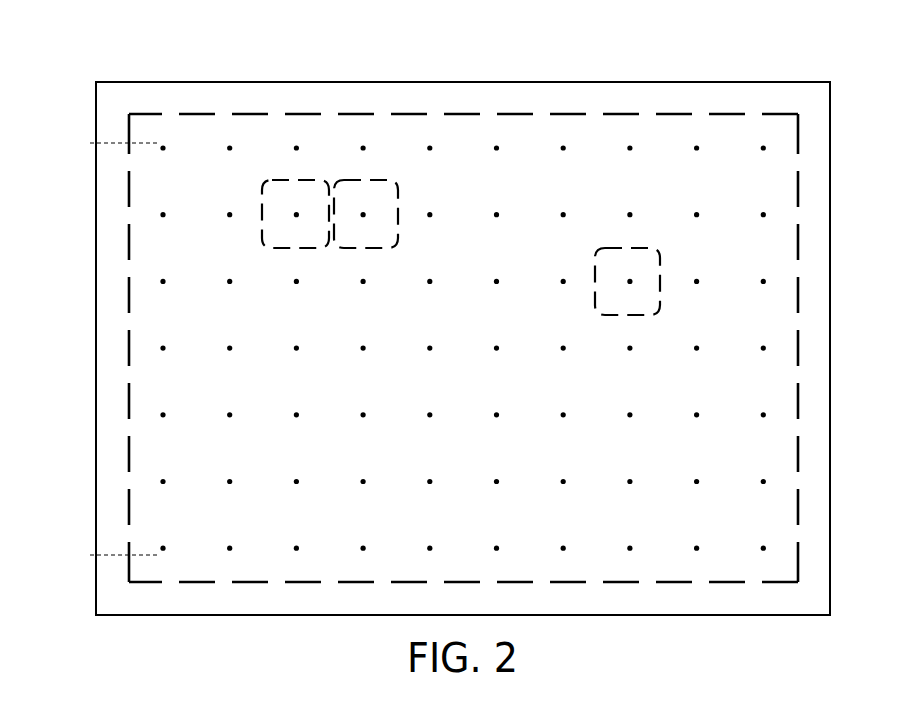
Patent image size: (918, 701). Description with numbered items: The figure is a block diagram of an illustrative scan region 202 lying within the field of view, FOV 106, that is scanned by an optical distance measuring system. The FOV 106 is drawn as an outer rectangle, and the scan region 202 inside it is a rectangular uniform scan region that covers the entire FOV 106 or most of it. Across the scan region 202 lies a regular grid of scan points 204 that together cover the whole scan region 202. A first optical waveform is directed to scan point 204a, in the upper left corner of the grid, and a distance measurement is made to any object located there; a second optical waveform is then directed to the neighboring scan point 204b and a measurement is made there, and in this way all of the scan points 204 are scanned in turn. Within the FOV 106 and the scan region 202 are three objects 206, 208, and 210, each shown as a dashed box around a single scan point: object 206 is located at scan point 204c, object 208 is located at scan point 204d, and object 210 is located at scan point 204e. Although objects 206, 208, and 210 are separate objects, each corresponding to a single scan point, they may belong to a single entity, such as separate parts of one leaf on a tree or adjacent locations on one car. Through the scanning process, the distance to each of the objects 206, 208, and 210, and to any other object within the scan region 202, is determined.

The FOV 106 is at (397, 82).
The scan region 202 is at (462, 114).
The scan points 204 is at (91, 143).
The scan point 204a is at (163, 142).
The scan point 204b is at (230, 142).
The scan point 204c is at (297, 219).
The scan point 204d is at (363, 219).
The scan point 204e is at (630, 285).
The object 206 is at (263, 197).
The object 208 is at (398, 210).
The object 210 is at (638, 247).